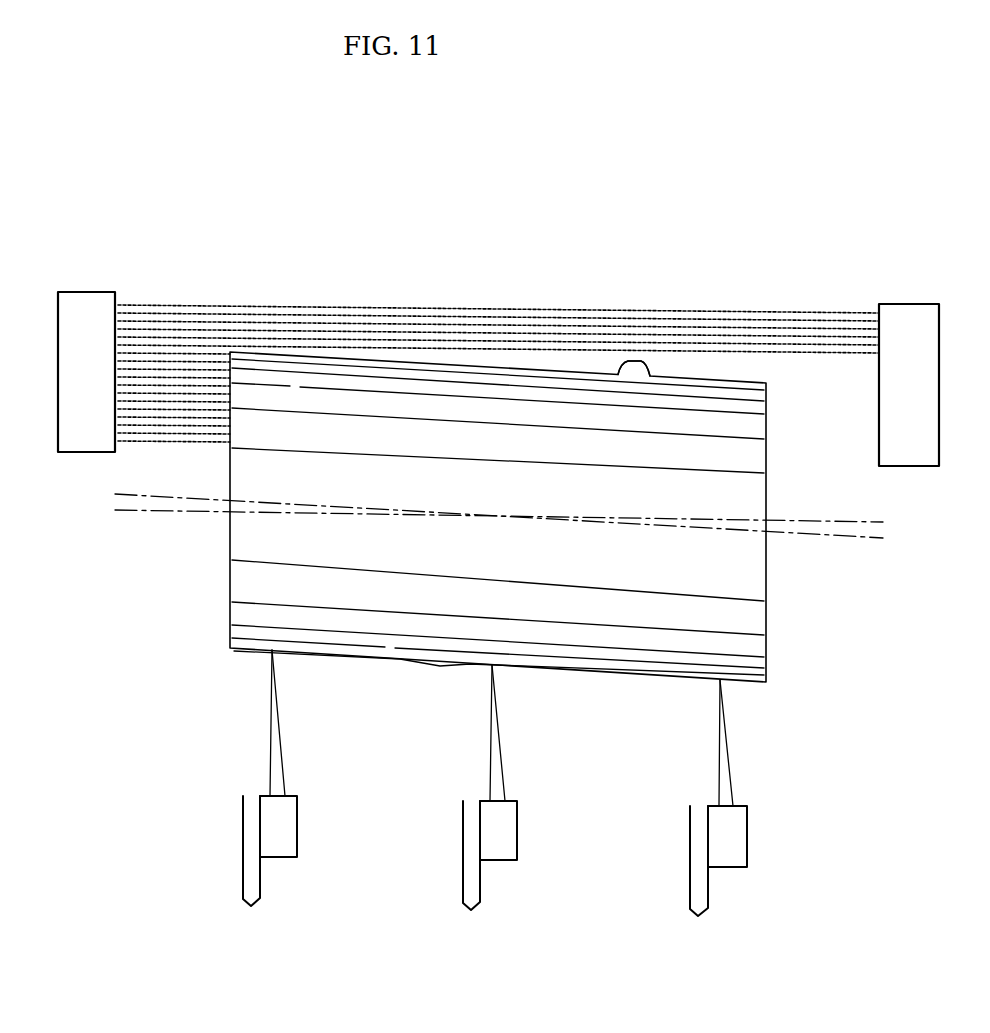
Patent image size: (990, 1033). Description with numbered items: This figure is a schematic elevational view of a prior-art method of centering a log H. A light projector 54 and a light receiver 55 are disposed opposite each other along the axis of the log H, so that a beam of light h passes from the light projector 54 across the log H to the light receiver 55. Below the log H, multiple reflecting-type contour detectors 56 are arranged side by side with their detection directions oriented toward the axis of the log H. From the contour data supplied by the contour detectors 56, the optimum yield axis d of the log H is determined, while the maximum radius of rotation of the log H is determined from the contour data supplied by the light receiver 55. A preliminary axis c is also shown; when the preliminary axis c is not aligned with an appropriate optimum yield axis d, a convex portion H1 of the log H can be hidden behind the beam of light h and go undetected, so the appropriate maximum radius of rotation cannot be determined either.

The light projector 54 is at (92, 440).
The light receiver 55 is at (915, 450).
The reflecting-type contour detector 56 is at (285, 828).
The beam of light h is at (330, 307).
The log H is at (442, 626).
The convex portion H1 is at (640, 362).
The preliminary axis c is at (178, 512).
The optimum yield axis d is at (812, 538).